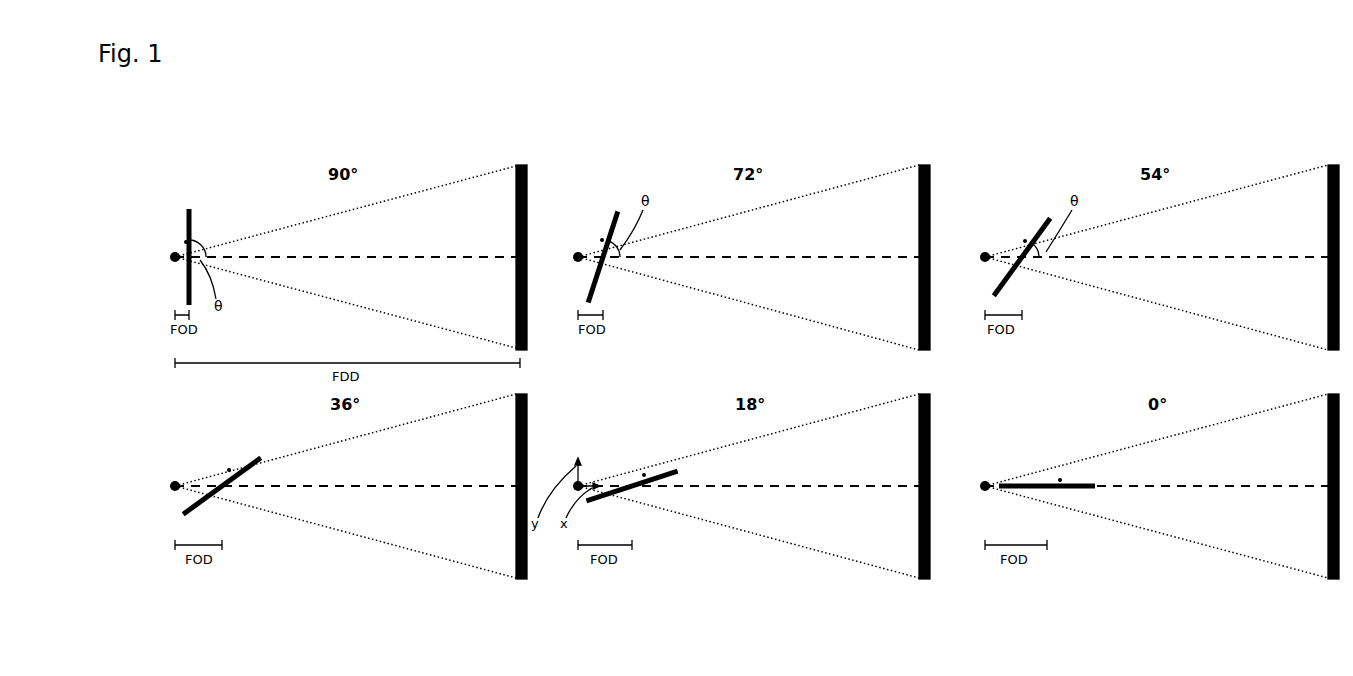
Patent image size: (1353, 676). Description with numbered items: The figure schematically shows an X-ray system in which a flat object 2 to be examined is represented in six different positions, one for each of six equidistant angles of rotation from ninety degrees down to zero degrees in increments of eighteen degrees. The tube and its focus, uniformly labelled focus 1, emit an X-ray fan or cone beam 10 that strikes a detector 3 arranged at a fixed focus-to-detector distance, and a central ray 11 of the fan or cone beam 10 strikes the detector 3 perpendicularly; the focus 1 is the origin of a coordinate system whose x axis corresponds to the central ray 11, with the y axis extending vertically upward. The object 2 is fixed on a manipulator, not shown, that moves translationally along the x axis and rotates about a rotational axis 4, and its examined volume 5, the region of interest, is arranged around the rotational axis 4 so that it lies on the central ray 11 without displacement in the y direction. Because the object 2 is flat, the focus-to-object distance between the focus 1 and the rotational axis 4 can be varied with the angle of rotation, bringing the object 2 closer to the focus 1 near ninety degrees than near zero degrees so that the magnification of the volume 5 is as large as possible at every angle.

The focus 1 is at (172, 255).
The object 2 is at (198, 243).
The detector 3 is at (516, 200).
The rotational axis 4 is at (188, 272).
The examined volume 5 is at (186, 242).
The fan or cone beam 10 is at (402, 232).
The central ray 11 is at (302, 255).